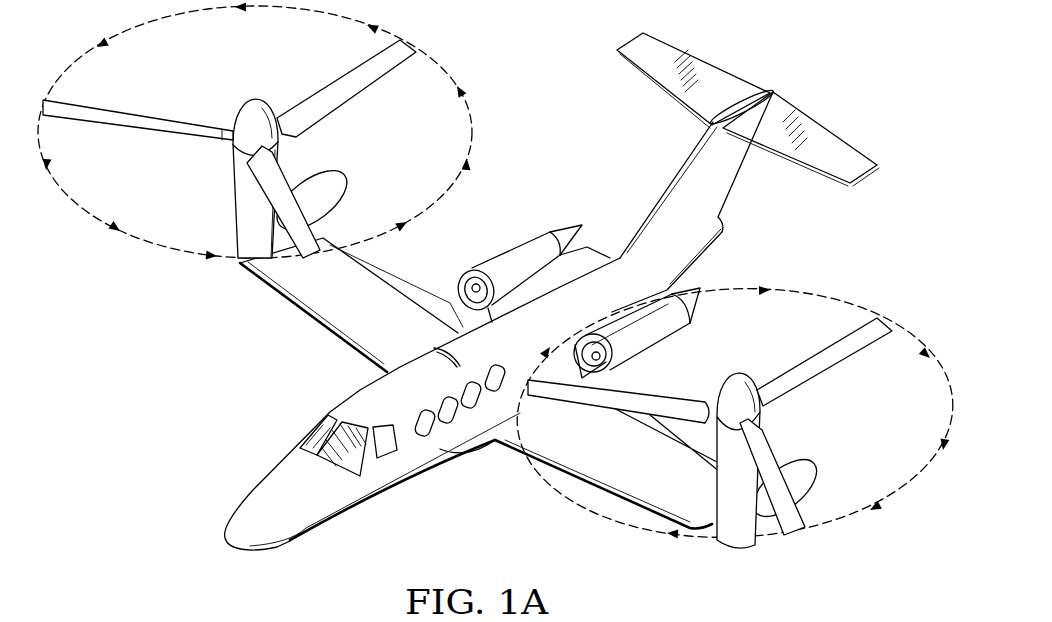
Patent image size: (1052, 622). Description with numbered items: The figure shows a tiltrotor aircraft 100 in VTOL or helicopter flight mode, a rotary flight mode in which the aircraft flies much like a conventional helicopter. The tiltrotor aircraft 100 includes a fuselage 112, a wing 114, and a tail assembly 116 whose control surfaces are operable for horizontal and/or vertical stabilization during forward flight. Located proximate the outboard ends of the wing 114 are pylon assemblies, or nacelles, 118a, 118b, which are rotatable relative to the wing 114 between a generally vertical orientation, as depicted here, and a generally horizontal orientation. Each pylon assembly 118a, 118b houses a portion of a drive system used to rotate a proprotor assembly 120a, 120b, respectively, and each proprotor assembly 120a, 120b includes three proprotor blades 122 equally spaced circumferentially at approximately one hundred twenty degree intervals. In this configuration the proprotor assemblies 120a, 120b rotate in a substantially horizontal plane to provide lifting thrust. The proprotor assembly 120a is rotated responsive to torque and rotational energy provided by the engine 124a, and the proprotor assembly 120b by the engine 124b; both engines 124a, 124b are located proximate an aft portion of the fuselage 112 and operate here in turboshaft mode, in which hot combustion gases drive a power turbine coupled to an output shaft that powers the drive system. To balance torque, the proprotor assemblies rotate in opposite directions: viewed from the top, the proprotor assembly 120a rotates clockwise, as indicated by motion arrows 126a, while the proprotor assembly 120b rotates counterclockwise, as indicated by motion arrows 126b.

The tiltrotor aircraft 100 is at (498, 285).
The fuselage 112 is at (300, 517).
The wing 114 is at (347, 322).
The tail assembly 116 is at (720, 80).
The pylon assembly 118a is at (770, 460).
The pylon assembly 118b is at (251, 142).
The proprotor assembly 120a is at (818, 415).
The proprotor assembly 120b is at (240, 78).
The proprotor blades 122 is at (333, 93).
The engine 124a is at (640, 327).
The engine 124b is at (527, 233).
The motion arrows 126a is at (860, 285).
The motion arrows 126b is at (473, 123).